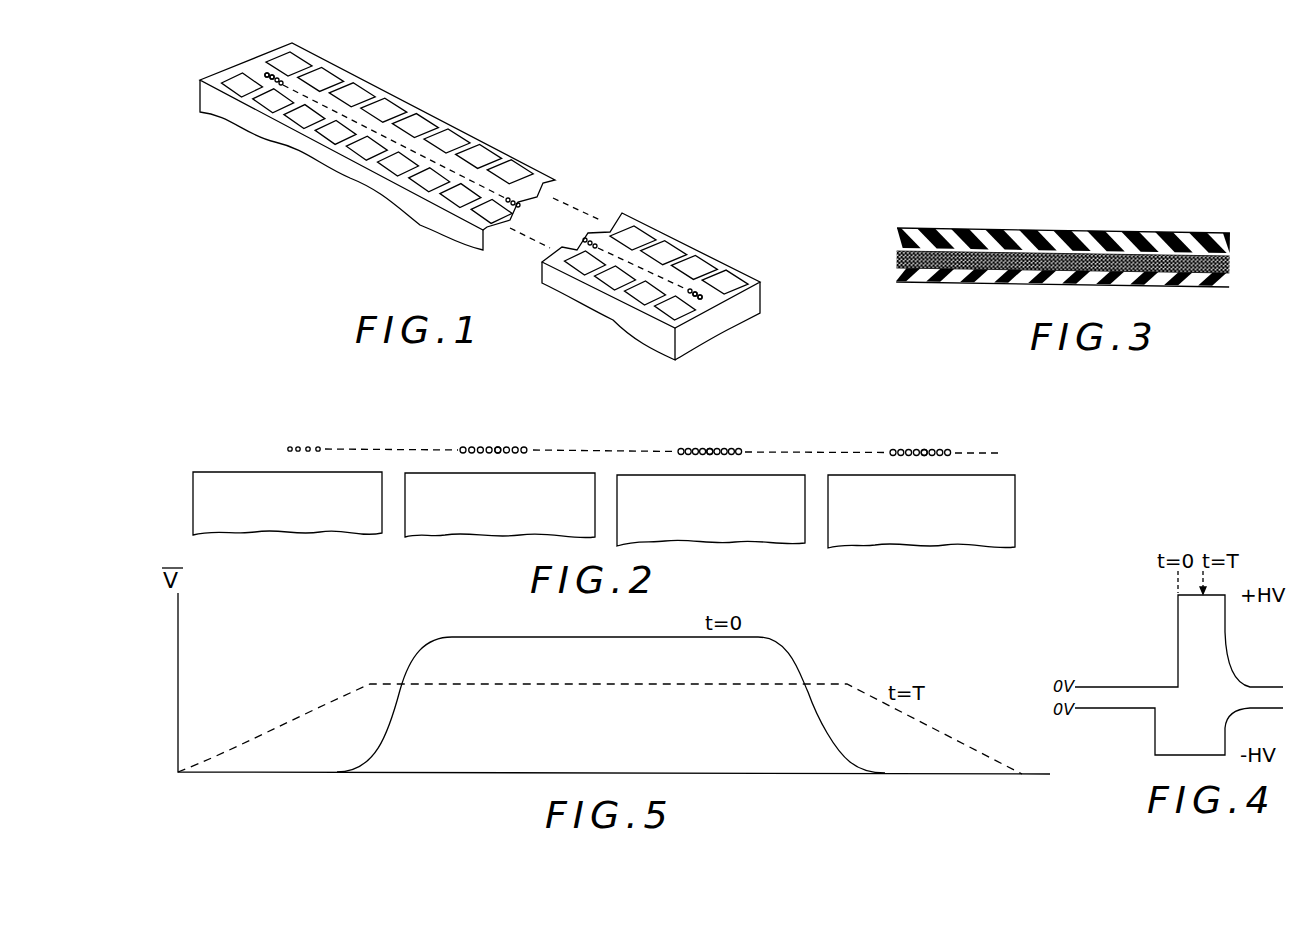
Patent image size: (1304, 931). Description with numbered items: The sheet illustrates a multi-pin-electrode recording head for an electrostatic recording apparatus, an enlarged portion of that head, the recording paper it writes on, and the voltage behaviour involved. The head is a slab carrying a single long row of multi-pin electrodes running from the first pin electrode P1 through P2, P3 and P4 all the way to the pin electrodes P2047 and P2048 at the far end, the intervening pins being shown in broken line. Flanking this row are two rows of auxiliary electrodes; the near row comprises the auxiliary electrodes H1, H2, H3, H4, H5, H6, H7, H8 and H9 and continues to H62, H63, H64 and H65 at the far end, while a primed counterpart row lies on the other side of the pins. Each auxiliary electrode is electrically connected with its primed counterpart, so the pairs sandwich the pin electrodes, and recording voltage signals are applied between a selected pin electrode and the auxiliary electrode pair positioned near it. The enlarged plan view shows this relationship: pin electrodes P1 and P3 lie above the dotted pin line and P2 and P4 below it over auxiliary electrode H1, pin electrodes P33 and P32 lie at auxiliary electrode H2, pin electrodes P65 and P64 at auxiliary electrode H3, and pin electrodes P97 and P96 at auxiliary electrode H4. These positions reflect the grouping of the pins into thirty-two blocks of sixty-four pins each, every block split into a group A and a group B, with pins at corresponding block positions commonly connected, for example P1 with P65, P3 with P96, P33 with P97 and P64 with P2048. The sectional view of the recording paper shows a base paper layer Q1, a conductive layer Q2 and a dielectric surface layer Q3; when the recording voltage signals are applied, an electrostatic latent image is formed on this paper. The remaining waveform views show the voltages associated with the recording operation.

In FIG. 1, the pin electrode P1 is at (268, 74).
In FIG. 2, the pin electrode P1 is at (288, 434).
In FIG. 1, the pin electrode P2 is at (271, 86).
In FIG. 2, the pin electrode P2 is at (297, 458).
In FIG. 2, the pin electrode P3 is at (308, 434).
In FIG. 2, the pin electrode P4 is at (318, 458).
In FIG. 2, the pin electrode P32 is at (495, 458).
In FIG. 2, the pin electrode P33 is at (505, 435).
In FIG. 2, the pin electrode P64 is at (707, 463).
In FIG. 2, the pin electrode P65 is at (718, 440).
In FIG. 2, the pin electrode P96 is at (921, 464).
In FIG. 2, the pin electrode P97 is at (934, 440).
In FIG. 1, the pin electrode P2047 is at (699, 289).
In FIG. 1, the pin electrode P2048 is at (701, 304).
In FIG. 1, the auxiliary electrode H1 is at (242, 85).
In FIG. 2, the auxiliary electrode H1 is at (287, 503).
In FIG. 1, the auxiliary electrode H2 is at (273, 101).
In FIG. 2, the auxiliary electrode H2 is at (500, 505).
In FIG. 1, the auxiliary electrode H3 is at (304, 117).
In FIG. 2, the auxiliary electrode H3 is at (711, 510).
In FIG. 1, the auxiliary electrode H4 is at (335, 132).
In FIG. 2, the auxiliary electrode H4 is at (921, 511).
In FIG. 1, the auxiliary electrode H5 is at (366, 148).
In FIG. 1, the auxiliary electrode H6 is at (398, 164).
In FIG. 1, the auxiliary electrode H7 is at (429, 180).
In FIG. 1, the auxiliary electrode H8 is at (460, 196).
In FIG. 1, the auxiliary electrode H9 is at (491, 211).
In FIG. 1, the auxiliary electrode H62 is at (585, 263).
In FIG. 1, the auxiliary electrode H63 is at (615, 278).
In FIG. 1, the auxiliary electrode H64 is at (645, 293).
In FIG. 1, the auxiliary electrode H65 is at (675, 308).
In FIG. 3, the base paper layer Q1 is at (896, 240).
In FIG. 3, the conductive layer Q2 is at (897, 259).
In FIG. 3, the dielectric surface layer Q3 is at (920, 283).